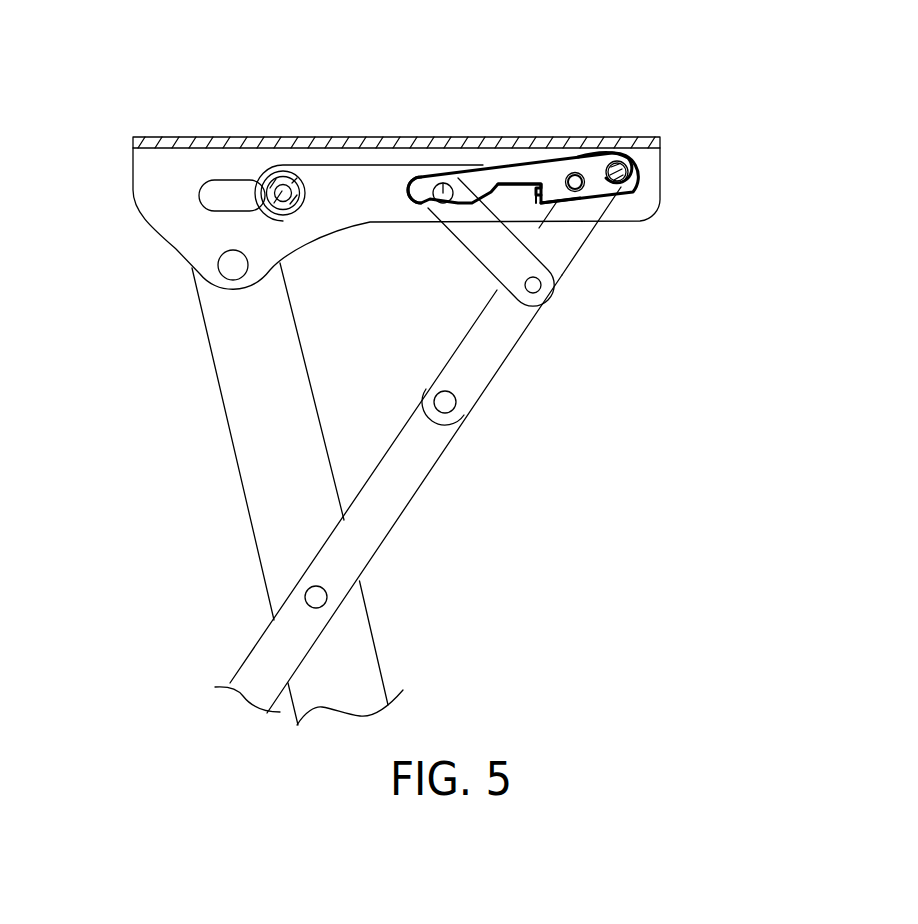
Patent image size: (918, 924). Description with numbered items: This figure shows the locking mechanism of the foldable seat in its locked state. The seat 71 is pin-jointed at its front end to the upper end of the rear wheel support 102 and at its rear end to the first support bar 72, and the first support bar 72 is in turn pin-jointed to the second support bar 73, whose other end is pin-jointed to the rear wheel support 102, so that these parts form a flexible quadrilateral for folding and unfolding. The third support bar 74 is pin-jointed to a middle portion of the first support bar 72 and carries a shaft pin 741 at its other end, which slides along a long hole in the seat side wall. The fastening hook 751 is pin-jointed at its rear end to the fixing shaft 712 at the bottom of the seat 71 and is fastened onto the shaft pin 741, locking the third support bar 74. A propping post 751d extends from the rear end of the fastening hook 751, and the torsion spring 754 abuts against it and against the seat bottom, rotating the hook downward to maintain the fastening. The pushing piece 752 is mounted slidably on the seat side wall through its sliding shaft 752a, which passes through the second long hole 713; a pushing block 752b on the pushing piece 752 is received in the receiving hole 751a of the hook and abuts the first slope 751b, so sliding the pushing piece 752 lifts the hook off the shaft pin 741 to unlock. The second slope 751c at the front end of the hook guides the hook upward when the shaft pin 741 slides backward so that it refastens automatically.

The seat 71 is at (178, 137).
The second long hole 713 is at (233, 188).
The pushing piece 752 is at (352, 190).
The sliding shaft 752a is at (284, 190).
The shaft pin 741 is at (443, 188).
The fastening hook 751 is at (548, 172).
The first slope 751b is at (488, 174).
The pushing block 752b is at (523, 183).
The fixing shaft 712 is at (630, 158).
The torsion spring 754 is at (650, 173).
The propping post 751d is at (625, 184).
The receiving hole 751a is at (510, 198).
The second slope 751c is at (410, 193).
The third support bar 74 is at (517, 257).
The first support bar 72 is at (488, 348).
The second support bar 73 is at (412, 452).
The rear wheel support 102 is at (226, 428).